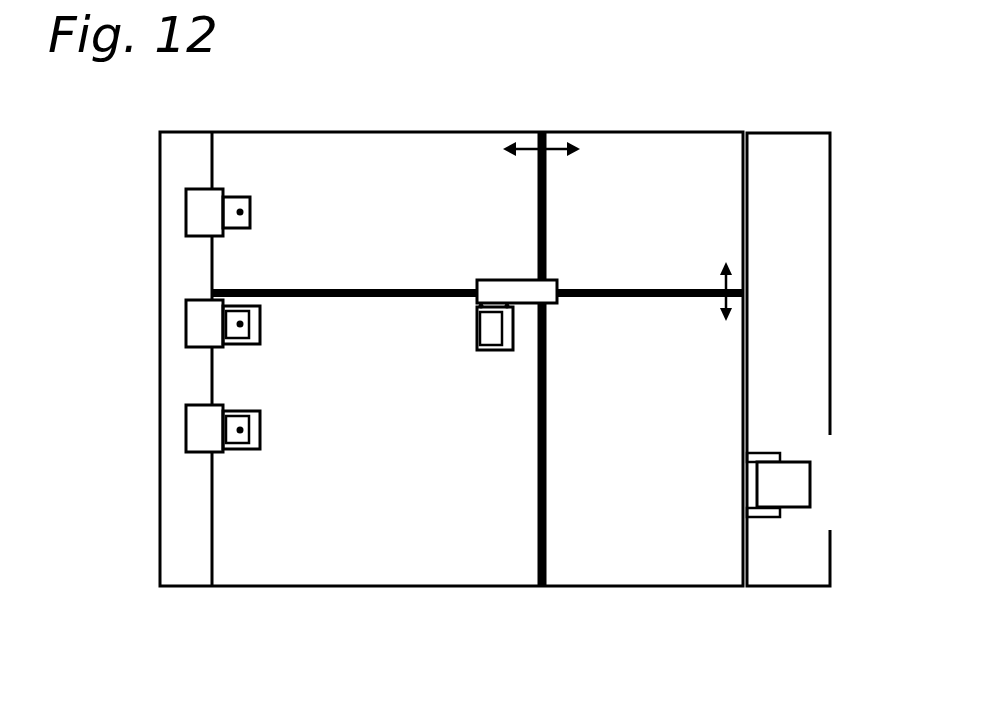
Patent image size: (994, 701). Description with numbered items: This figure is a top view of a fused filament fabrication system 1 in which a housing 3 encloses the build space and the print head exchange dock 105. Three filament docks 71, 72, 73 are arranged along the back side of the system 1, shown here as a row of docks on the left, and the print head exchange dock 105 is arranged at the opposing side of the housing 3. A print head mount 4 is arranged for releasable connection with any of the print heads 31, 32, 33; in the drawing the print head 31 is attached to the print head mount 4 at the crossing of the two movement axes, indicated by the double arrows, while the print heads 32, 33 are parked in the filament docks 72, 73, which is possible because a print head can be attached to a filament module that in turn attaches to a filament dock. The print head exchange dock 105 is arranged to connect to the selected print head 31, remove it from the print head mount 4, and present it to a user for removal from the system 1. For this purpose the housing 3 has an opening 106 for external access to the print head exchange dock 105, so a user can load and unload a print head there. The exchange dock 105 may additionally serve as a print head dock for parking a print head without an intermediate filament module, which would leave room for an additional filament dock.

The fused filament fabrication system 1 is at (122, 532).
The housing 3 is at (468, 586).
The print head mount 4 is at (516, 283).
The print head 31 is at (485, 350).
The print head 32 is at (255, 324).
The print head 33 is at (255, 430).
The filament dock 71 is at (196, 210).
The filament dock 72 is at (196, 322).
The filament dock 73 is at (196, 427).
The print head exchange dock 105 is at (795, 503).
The opening 106 is at (838, 485).